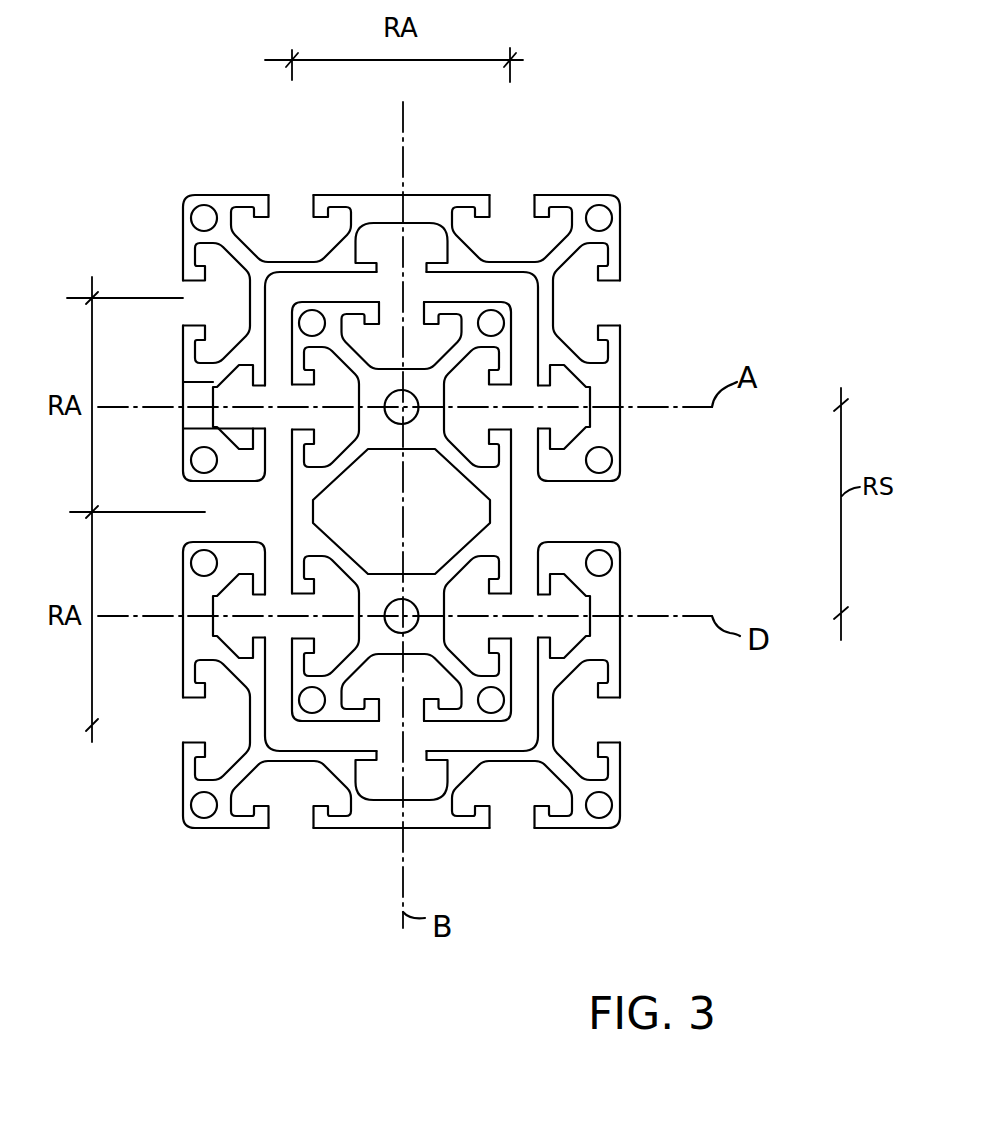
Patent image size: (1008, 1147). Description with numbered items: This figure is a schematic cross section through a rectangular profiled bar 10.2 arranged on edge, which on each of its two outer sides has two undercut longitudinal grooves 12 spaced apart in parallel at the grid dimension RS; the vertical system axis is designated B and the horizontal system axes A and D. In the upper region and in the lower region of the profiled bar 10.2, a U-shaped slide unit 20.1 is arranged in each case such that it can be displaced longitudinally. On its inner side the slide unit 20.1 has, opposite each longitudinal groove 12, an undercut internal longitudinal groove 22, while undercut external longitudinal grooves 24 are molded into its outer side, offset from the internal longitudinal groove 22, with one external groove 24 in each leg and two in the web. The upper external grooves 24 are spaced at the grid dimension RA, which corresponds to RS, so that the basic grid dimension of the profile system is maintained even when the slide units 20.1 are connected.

The profiled bar 10.2 is at (513, 507).
The longitudinal groove 12 is at (380, 347).
The slide unit 20.1 is at (617, 195).
The internal longitudinal groove 22 is at (413, 245).
The external longitudinal groove 24 is at (285, 237).